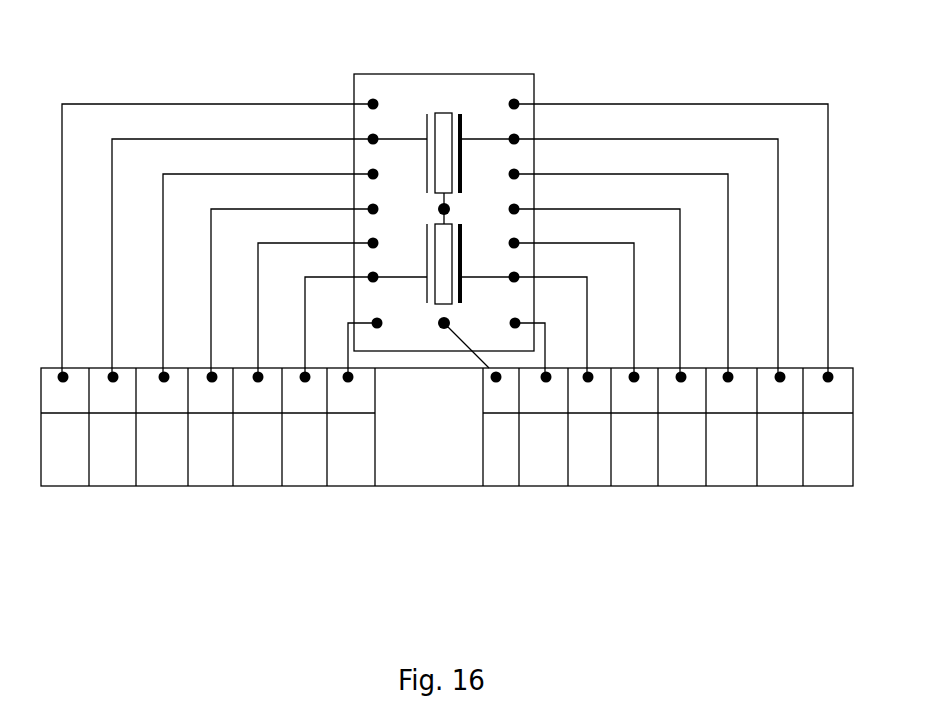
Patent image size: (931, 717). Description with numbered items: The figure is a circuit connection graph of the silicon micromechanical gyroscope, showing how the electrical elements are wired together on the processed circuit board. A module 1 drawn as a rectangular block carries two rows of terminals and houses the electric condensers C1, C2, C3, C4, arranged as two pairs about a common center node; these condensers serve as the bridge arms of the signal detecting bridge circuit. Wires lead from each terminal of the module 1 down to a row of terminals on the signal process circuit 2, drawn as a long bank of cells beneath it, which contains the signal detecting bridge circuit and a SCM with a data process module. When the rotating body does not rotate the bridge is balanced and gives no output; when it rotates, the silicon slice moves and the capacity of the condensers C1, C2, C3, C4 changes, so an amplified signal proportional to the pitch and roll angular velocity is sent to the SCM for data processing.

The capacitor module 1 is at (448, 183).
The signal process circuit 2 is at (447, 453).
The electric condenser C1 is at (412, 161).
The electric condenser C2 is at (487, 153).
The electric condenser C3 is at (412, 256).
The electric condenser C4 is at (487, 263).